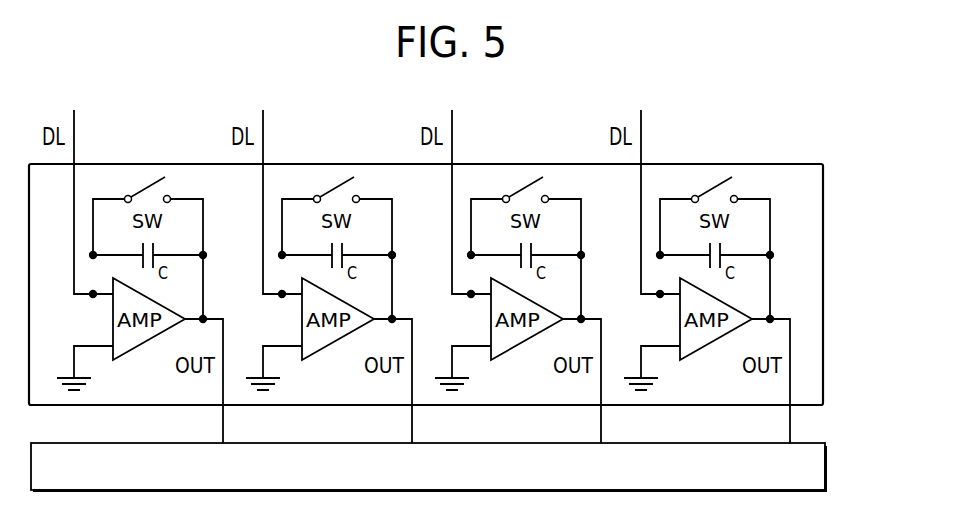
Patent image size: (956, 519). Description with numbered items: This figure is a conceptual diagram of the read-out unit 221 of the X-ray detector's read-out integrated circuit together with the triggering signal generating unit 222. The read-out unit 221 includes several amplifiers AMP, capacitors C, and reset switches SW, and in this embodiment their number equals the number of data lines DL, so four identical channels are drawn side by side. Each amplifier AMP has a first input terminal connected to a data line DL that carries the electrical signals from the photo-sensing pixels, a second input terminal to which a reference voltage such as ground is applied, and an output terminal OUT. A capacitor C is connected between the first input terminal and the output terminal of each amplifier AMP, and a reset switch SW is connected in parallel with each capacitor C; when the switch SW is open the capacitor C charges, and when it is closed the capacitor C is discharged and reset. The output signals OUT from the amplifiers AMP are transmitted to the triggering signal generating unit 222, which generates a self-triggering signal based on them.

The read-out unit 221 is at (458, 276).
The triggering signal generating unit 222 is at (825, 443).
The data line DL is at (361, 204).
The reset switch SW is at (431, 216).
The capacitor C is at (432, 263).
The amplifier AMP is at (404, 334).
The output terminal OUT is at (482, 349).